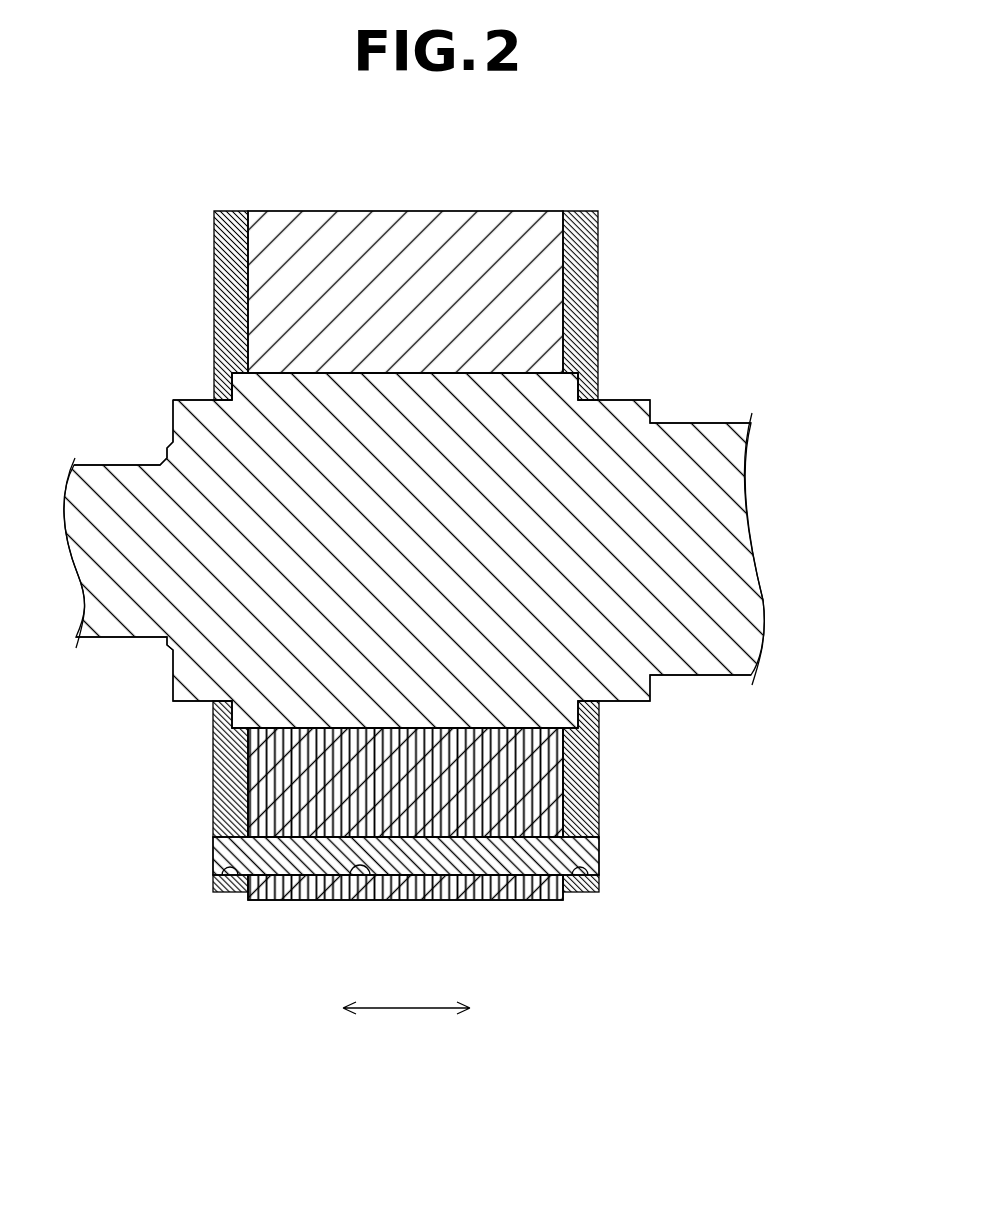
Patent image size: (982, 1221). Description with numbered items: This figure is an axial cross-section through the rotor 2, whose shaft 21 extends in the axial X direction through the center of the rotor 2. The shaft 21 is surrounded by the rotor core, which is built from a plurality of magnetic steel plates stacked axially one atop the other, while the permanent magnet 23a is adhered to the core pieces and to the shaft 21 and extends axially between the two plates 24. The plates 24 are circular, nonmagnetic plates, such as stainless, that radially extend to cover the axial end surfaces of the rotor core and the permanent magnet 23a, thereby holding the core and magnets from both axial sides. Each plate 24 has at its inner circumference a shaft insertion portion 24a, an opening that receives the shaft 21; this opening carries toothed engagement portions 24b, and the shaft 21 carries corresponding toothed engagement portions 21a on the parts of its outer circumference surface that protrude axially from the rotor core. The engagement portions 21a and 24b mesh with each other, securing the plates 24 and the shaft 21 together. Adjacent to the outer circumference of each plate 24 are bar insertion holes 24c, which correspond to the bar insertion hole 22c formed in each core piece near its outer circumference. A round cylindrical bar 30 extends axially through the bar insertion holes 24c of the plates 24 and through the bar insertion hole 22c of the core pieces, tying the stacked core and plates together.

The rotor 2 is at (630, 198).
The shaft 21 is at (737, 540).
The toothed engagement portions 21a is at (232, 392).
The permanent magnet 23a is at (447, 245).
The plates 24 is at (232, 294).
The shaft insertion portion 24a is at (232, 401).
The toothed engagement portions 24b is at (225, 378).
The bar insertion holes 24c is at (215, 893).
The bar insertion hole 22c is at (360, 877).
The bar 30 is at (450, 856).